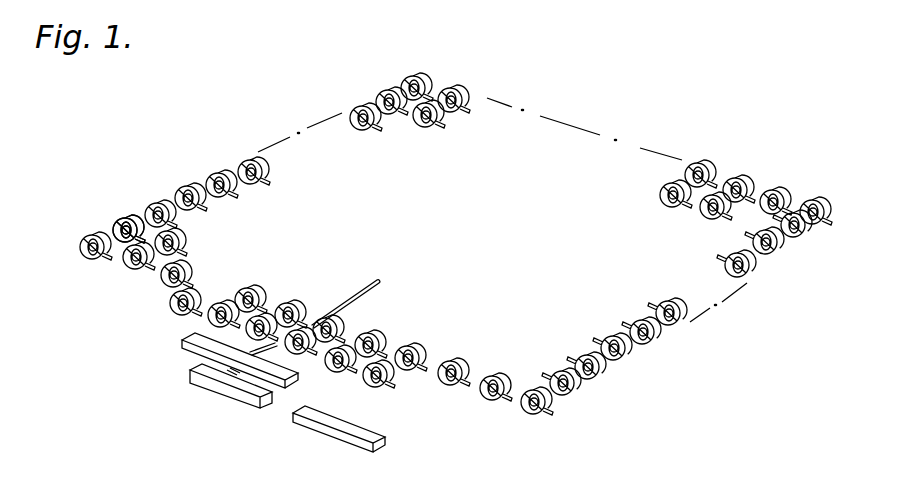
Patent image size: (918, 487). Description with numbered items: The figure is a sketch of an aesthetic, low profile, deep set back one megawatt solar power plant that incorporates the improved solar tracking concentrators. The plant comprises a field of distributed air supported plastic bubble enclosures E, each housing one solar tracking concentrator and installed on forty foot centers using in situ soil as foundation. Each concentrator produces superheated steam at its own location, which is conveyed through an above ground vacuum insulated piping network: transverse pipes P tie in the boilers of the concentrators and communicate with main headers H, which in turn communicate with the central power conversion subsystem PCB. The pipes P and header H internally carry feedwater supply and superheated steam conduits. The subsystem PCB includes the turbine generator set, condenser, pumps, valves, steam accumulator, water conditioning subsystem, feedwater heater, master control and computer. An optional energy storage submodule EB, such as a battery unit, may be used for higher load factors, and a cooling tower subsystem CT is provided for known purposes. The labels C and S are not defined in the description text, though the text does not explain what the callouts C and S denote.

The cup C is at (159, 202).
The air supported plastic bubble enclosure E is at (240, 156).
The transverse pipe P is at (210, 210).
The socket S is at (121, 269).
The main header H is at (363, 281).
The power conversion subsystem PCB is at (185, 347).
The cooling tower subsystem CT is at (222, 390).
The energy storage submodule EB is at (338, 432).